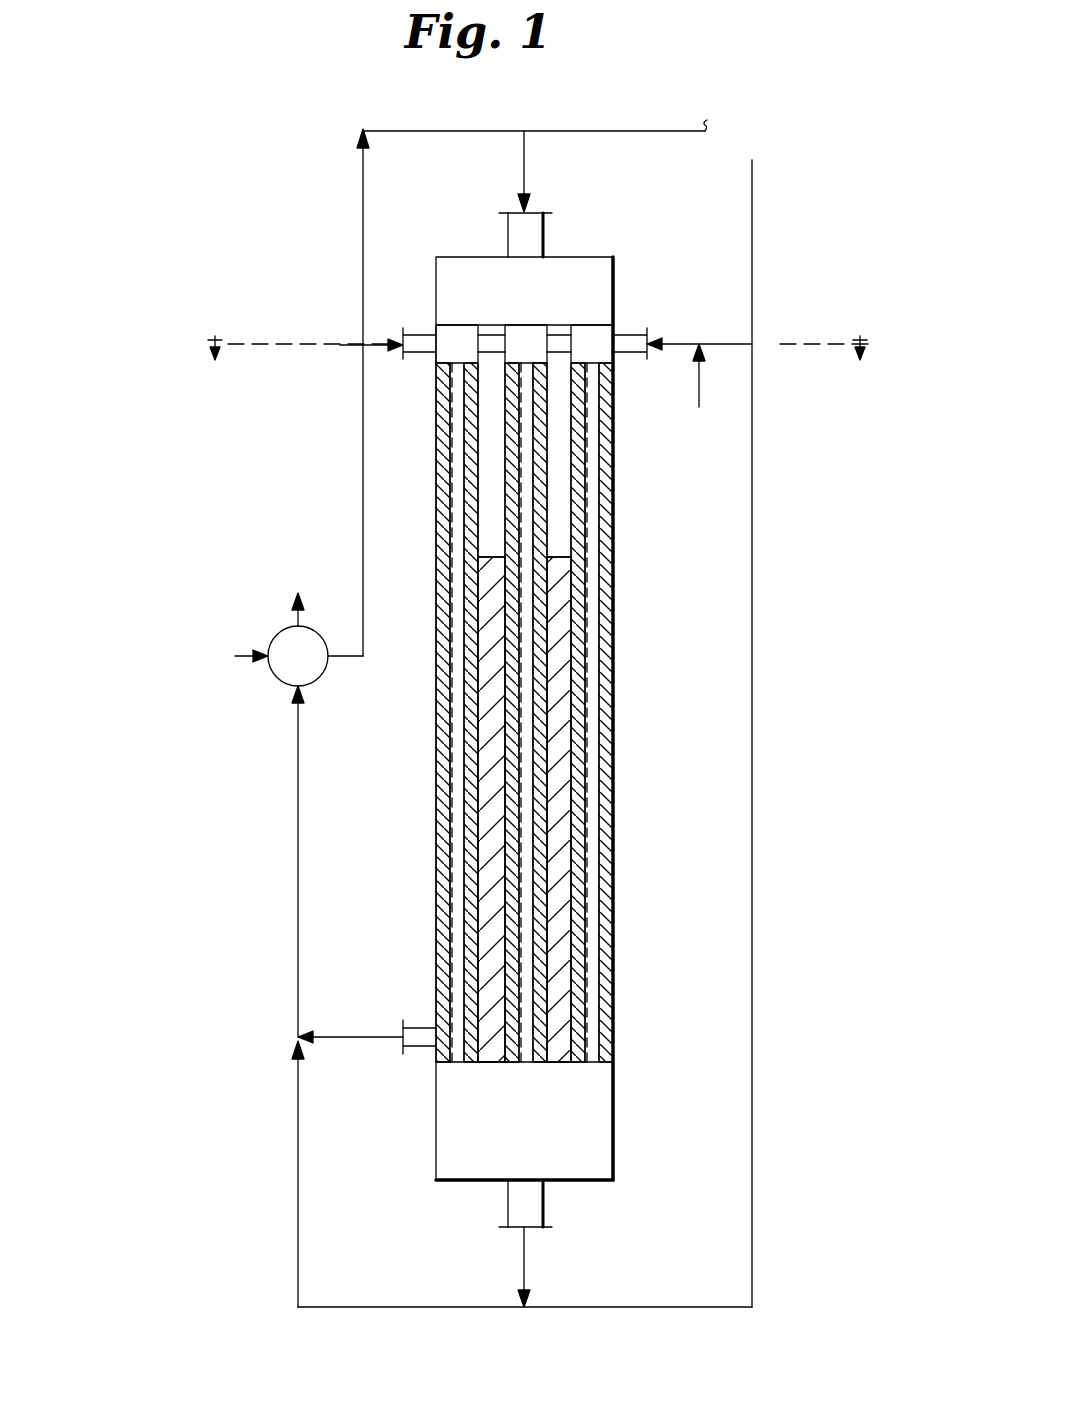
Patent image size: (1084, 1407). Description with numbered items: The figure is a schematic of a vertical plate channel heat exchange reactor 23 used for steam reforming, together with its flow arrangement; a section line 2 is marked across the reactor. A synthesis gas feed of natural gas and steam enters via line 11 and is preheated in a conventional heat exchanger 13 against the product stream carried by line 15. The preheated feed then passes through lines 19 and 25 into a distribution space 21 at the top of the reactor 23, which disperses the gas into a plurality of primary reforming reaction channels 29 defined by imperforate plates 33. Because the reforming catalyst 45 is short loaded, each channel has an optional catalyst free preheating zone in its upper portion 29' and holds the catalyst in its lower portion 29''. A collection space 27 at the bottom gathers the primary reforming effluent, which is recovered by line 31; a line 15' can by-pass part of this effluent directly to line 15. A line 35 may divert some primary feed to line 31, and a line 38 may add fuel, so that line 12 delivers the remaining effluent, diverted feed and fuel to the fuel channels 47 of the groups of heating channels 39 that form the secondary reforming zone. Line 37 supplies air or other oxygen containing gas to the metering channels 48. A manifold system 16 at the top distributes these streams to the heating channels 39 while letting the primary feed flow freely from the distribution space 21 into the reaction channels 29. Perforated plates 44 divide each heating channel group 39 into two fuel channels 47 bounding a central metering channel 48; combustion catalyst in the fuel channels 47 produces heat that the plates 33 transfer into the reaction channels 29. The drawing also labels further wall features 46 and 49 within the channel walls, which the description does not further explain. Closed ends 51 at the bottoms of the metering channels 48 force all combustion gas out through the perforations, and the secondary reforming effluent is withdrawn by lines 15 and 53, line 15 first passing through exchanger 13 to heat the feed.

The section line 2- 2 is at (538, 334).
The feed line 11 is at (255, 656).
The fuel delivery line 12 is at (722, 345).
The heat exchanger 13 is at (285, 680).
The product line 15 is at (342, 884).
The by-pass line 15' is at (327, 1174).
The manifold system 16 is at (552, 324).
The preheated feed line 19 is at (415, 131).
The distribution space 21 is at (547, 300).
The heat exchange reactor 23 is at (630, 765).
The feed inlet line 25 is at (524, 165).
The collection space 27 is at (547, 1152).
The primary reforming reaction channels 29 is at (535, 712).
The upper portion of reaction channels 29' is at (544, 712).
The lower portion of reaction channels 29'' is at (526, 712).
The primary effluent line 31 is at (752, 1120).
The imperforate plates 33 is at (535, 580).
The feed diversion line 35 is at (602, 132).
The air line 37 is at (357, 346).
The additional fuel line 38 is at (699, 390).
The heating channel groups 39 is at (426, 424).
The perforated plates 44 is at (595, 648).
The reforming catalyst 45 is at (485, 685).
The tube inner wall 46 is at (465, 1000).
The fuel channels 47 is at (480, 590).
The metering channel 48 is at (590, 705).
The tube wall layer 49 is at (455, 818).
The closed ends 51 is at (580, 1063).
The effluent withdrawal line 53 is at (298, 608).